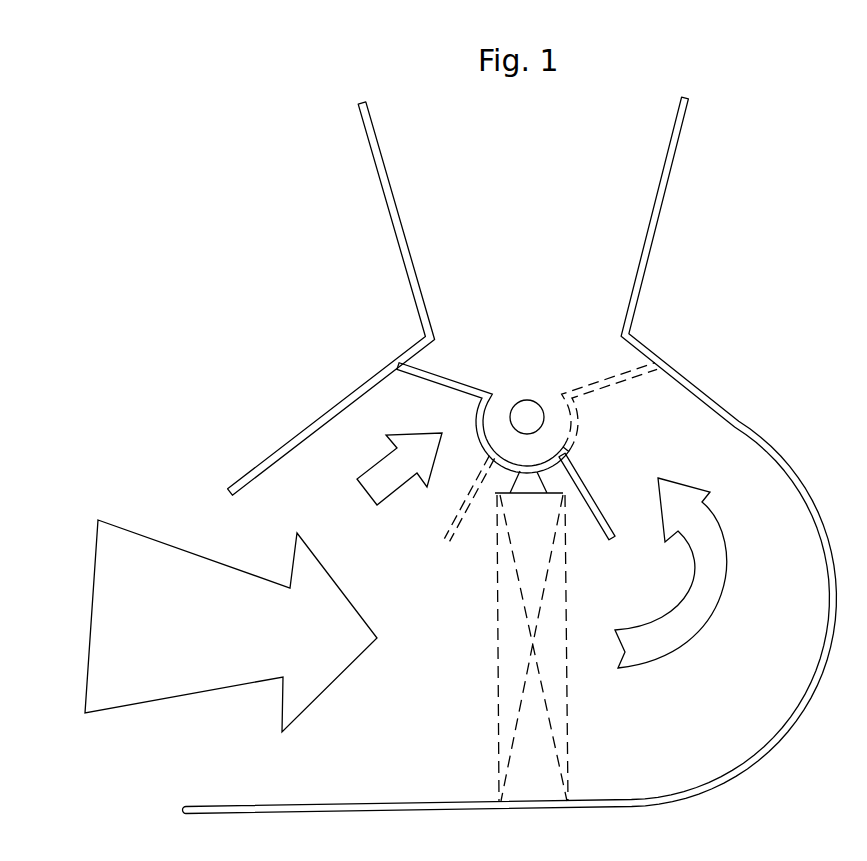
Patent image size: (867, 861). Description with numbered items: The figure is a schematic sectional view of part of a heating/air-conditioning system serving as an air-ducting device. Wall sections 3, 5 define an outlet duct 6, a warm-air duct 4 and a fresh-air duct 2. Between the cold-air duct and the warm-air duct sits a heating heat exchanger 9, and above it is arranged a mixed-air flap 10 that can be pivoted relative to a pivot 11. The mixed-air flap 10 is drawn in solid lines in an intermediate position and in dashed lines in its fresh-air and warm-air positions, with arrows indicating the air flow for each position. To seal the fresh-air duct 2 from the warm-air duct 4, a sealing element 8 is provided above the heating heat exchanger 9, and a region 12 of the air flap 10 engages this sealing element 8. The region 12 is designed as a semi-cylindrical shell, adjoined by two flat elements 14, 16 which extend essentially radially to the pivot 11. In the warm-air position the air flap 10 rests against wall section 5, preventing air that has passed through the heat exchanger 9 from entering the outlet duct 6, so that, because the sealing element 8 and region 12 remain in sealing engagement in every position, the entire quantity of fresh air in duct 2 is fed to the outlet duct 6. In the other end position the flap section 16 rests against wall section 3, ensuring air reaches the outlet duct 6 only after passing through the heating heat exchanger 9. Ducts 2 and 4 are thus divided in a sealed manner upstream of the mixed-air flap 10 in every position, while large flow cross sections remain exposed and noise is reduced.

The fresh-air duct 2 is at (385, 734).
The wall section 3 is at (355, 393).
The warm-air duct 4 is at (758, 669).
The wall section 5 is at (715, 393).
The outlet duct 6 is at (513, 168).
The sealing element 8 is at (533, 486).
The heating heat exchanger 9 is at (550, 672).
The mixed-air flap 10 is at (525, 327).
The pivot 11 is at (527, 411).
The region of the air flap 12 is at (569, 490).
The flat element 14 is at (582, 481).
The flat element 16 is at (415, 379).